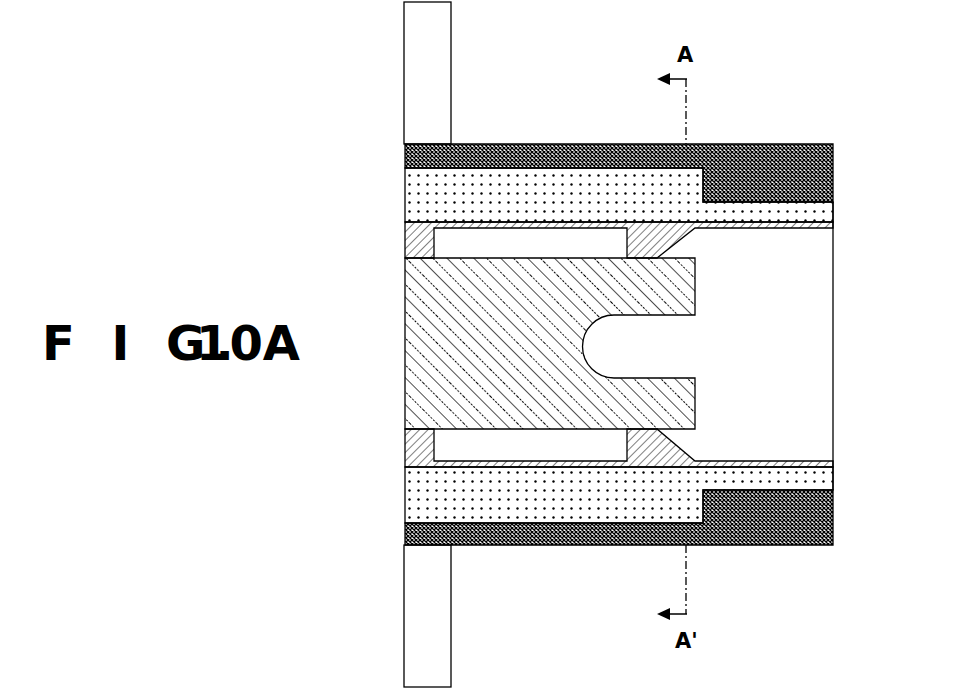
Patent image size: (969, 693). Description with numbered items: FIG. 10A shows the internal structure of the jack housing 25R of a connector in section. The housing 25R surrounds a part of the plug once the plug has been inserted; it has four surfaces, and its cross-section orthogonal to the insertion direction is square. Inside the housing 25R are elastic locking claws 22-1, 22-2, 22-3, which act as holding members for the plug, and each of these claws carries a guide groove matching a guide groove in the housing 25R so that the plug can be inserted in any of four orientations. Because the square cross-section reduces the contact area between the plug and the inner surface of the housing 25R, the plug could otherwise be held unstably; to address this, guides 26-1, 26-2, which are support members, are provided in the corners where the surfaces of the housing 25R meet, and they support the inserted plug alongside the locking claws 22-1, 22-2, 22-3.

The housing 25R is at (817, 144).
The guide 26-1 is at (563, 195).
The guide 26-2 is at (580, 495).
The elastic locking claw 22-1 is at (675, 244).
The elastic locking claw 22-2 is at (667, 316).
The elastic locking claw 22-3 is at (687, 412).